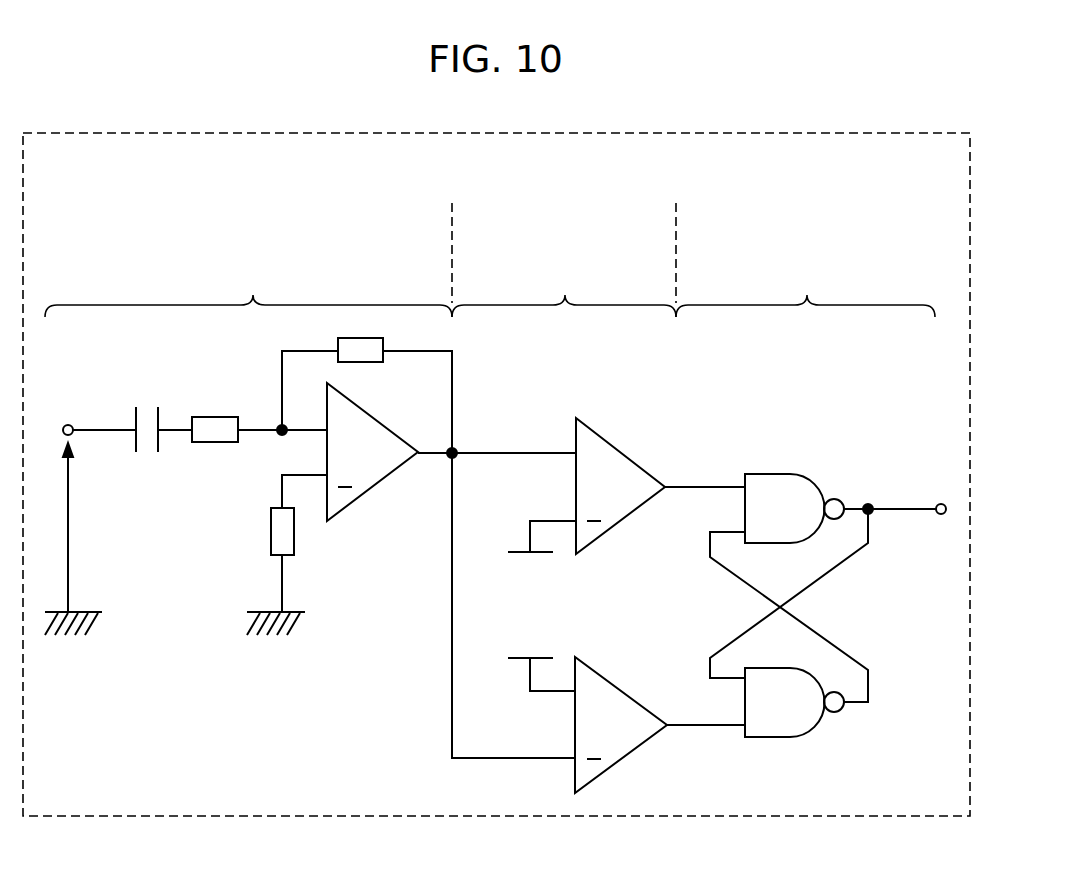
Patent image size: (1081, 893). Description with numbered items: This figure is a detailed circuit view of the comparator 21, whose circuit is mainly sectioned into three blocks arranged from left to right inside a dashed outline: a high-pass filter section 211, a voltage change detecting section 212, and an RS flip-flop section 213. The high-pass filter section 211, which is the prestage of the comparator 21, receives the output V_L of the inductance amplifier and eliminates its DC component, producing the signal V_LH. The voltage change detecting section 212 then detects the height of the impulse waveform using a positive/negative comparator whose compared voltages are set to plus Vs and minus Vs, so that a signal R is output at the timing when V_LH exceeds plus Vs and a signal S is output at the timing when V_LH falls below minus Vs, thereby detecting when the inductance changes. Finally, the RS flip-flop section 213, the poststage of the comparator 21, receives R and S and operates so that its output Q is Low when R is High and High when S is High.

The comparator 21 is at (495, 133).
The high-pass filter section 211 is at (258, 298).
The voltage change detecting section 212 is at (565, 298).
The RS flip-flop section 213 is at (807, 298).